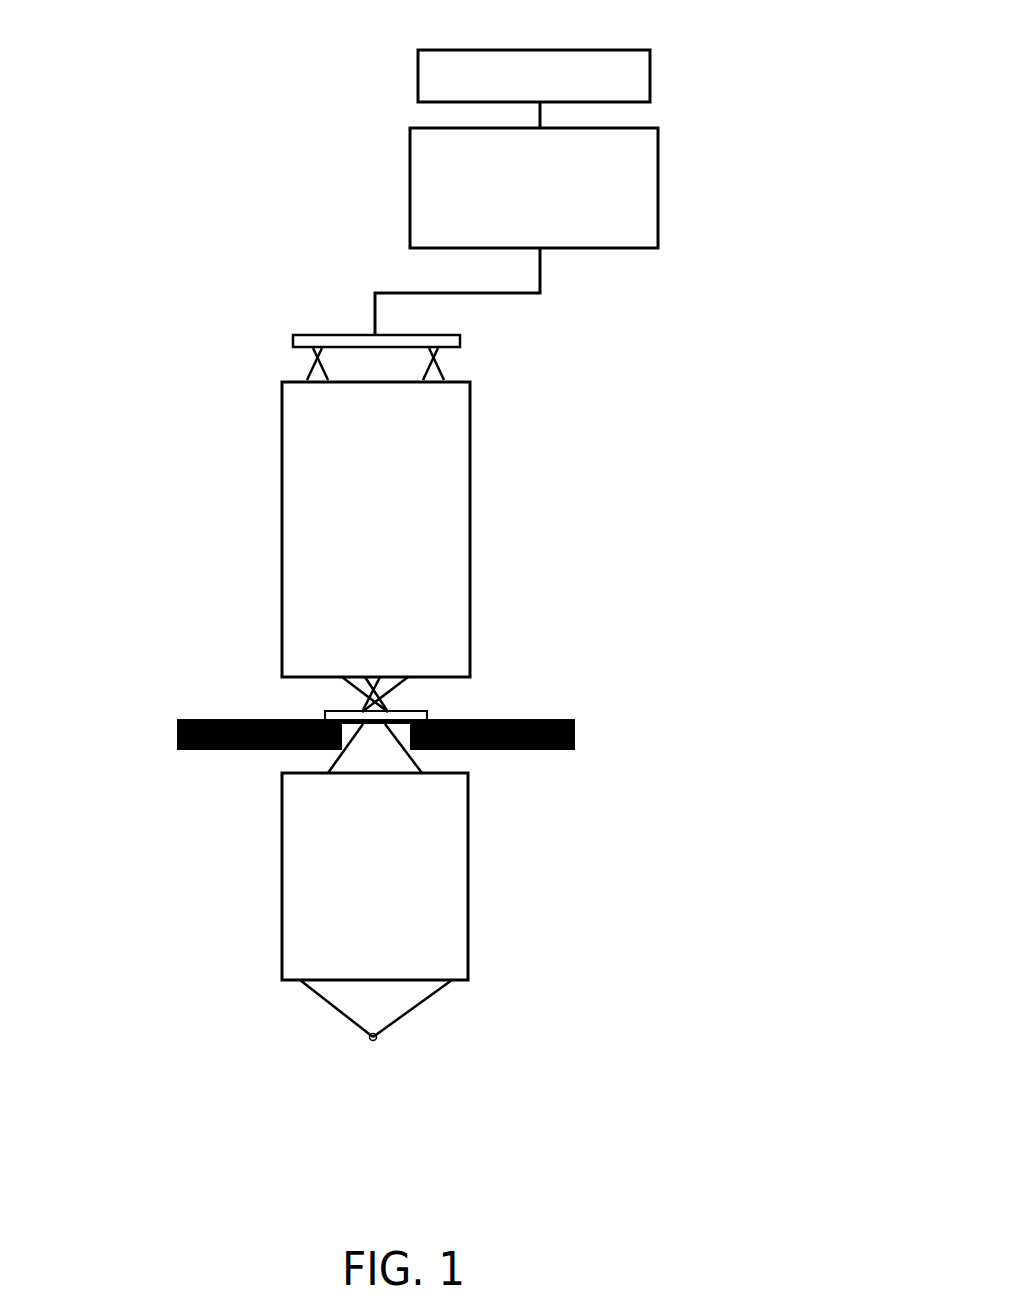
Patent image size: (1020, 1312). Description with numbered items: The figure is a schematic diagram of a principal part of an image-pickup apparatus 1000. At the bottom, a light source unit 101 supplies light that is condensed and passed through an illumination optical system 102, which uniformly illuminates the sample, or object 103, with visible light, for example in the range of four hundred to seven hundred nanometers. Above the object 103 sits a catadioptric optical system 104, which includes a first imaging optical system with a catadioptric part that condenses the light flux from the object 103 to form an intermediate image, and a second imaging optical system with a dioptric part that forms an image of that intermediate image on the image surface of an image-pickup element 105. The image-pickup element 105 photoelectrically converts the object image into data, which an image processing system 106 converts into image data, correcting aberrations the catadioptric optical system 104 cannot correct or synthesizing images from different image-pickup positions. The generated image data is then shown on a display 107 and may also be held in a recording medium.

The image-pickup apparatus 1000 is at (415, 32).
The light source unit 101 is at (377, 1039).
The illumination optical system 102 is at (468, 870).
The object 103 is at (322, 715).
The catadioptric optical system 104 is at (467, 513).
The image-pickup element 105 is at (330, 337).
The image processing system 106 is at (658, 208).
The display 107 is at (650, 73).